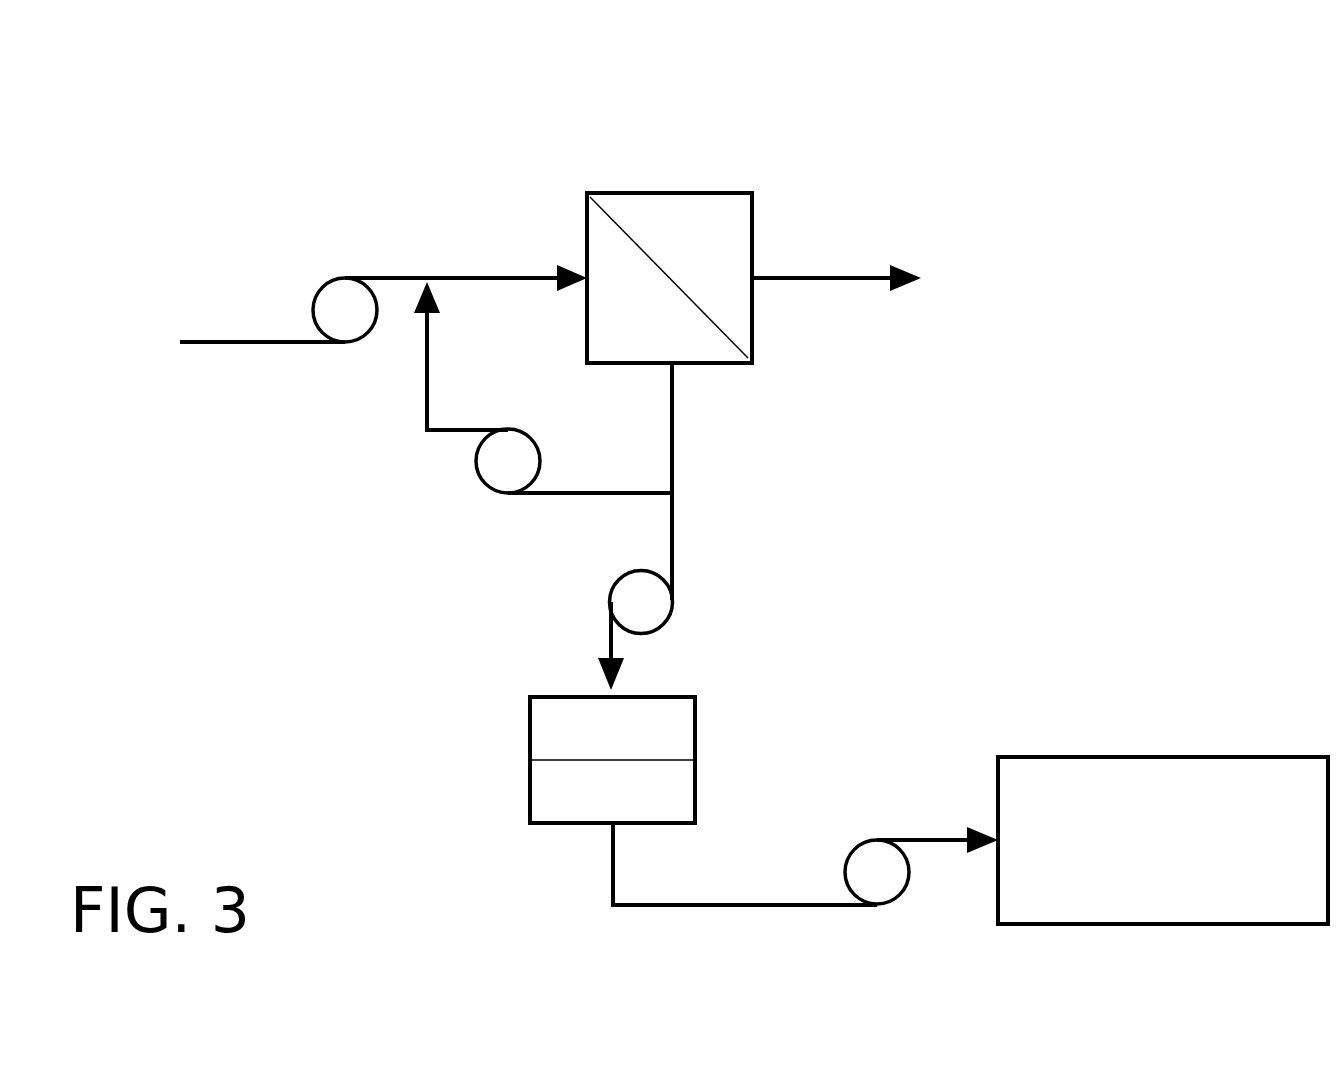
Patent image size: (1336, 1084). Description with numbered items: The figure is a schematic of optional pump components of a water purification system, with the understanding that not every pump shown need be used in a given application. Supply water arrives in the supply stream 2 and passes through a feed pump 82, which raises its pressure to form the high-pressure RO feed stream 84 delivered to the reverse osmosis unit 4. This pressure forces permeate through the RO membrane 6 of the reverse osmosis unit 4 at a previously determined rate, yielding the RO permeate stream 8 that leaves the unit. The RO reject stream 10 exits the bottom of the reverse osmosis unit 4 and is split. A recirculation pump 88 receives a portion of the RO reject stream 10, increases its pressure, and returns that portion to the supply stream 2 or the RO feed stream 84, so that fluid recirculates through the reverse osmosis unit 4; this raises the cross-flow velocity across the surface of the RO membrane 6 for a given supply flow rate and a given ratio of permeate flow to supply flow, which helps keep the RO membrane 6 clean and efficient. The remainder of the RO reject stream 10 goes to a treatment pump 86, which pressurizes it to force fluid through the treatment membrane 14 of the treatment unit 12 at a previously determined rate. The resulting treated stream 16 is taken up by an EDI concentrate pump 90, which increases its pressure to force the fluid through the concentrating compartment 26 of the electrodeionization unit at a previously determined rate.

The supply stream 2 is at (222, 347).
The reverse osmosis unit 4 is at (682, 150).
The RO membrane 6 is at (667, 258).
The RO permeate stream 8 is at (818, 288).
The RO reject stream 10 is at (683, 410).
The treatment unit 12 is at (462, 747).
The treatment membrane 14 is at (673, 768).
The treated stream 16 is at (603, 875).
The concentrating compartment 26 is at (1142, 904).
The feed pump 82 is at (325, 270).
The RO feed stream 84 is at (503, 268).
The treatment pump 86 is at (683, 600).
The recirculation pump 88 is at (473, 477).
The EDI concentrate pump 90 is at (878, 830).